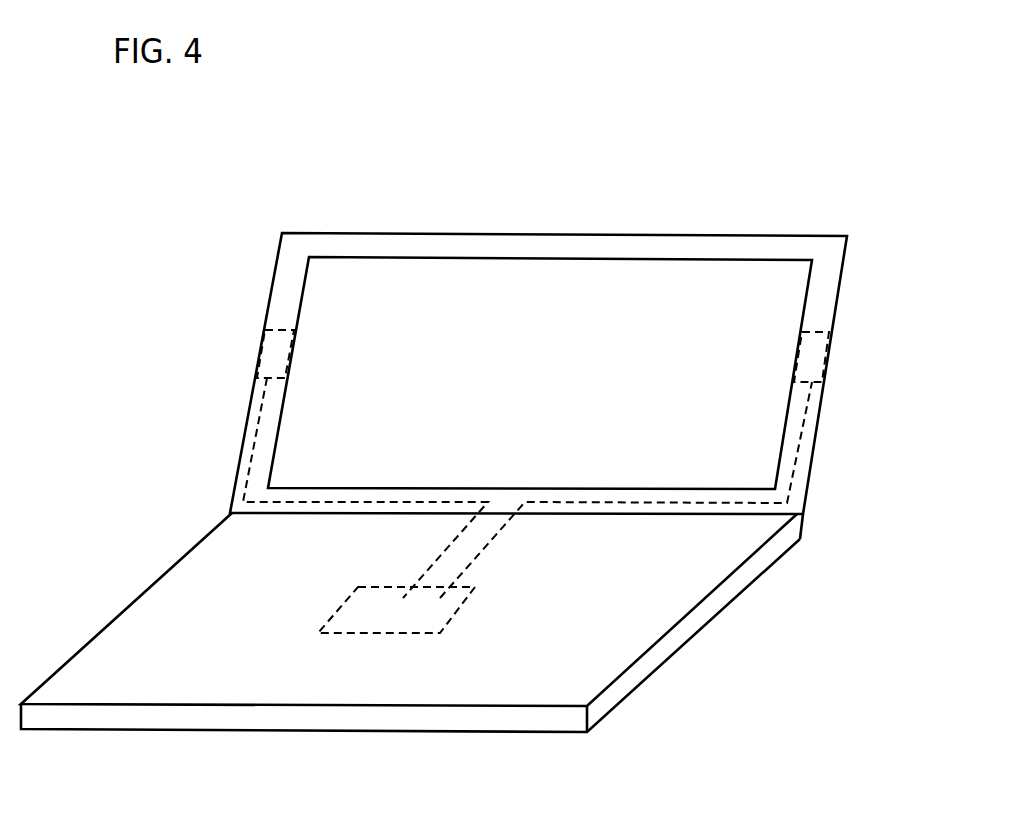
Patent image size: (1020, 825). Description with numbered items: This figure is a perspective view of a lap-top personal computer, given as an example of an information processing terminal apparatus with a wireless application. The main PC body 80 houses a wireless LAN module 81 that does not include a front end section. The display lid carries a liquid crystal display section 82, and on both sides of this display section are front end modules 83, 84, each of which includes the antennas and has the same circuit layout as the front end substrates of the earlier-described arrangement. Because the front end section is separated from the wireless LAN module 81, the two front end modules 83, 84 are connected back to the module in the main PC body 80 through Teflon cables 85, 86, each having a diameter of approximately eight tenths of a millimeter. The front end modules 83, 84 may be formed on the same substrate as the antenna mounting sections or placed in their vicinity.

The main PC body 80 is at (748, 630).
The wireless LAN module 81 is at (366, 604).
The liquid crystal display section 82 is at (511, 309).
The front end module 83 is at (260, 357).
The front end module 84 is at (822, 357).
The Teflon cable 85 is at (244, 442).
The Teflon cable 86 is at (809, 444).